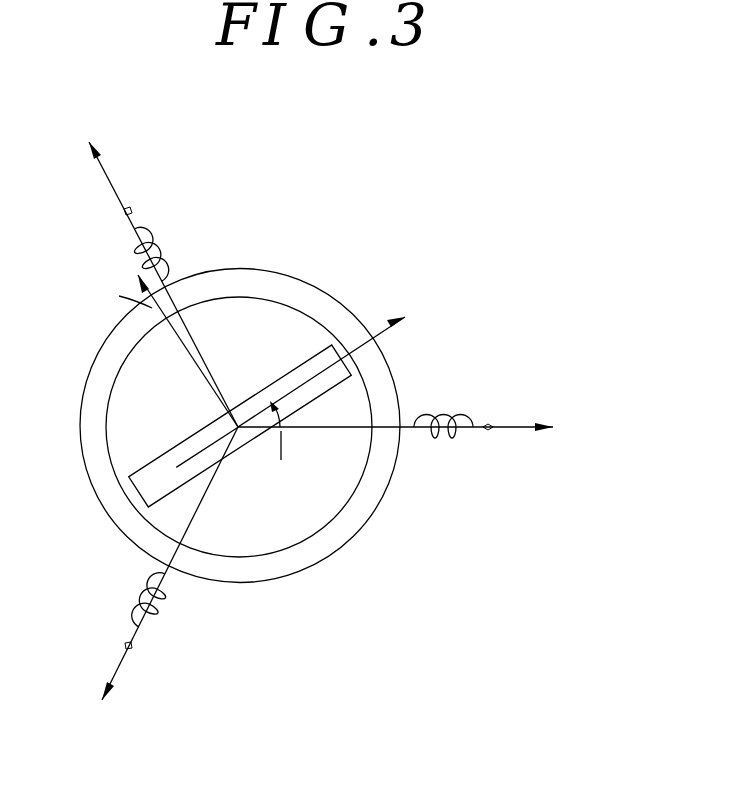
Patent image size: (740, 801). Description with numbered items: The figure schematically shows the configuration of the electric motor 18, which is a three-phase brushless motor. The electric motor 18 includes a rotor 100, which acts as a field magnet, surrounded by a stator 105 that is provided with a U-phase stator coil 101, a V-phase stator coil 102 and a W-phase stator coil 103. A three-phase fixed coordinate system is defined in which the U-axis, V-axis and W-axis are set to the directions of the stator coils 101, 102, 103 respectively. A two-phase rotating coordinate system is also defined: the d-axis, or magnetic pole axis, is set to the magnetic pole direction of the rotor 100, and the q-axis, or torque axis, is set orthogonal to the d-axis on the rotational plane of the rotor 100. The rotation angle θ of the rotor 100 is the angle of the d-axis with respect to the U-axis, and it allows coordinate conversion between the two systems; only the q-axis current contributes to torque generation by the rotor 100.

The electric motor 18 is at (295, 427).
The rotor 100 is at (176, 462).
The U-phase stator coil 101 is at (438, 411).
The V-phase stator coil 102 is at (151, 228).
The W-phase stator coil 103 is at (138, 598).
The stator 105 is at (369, 502).